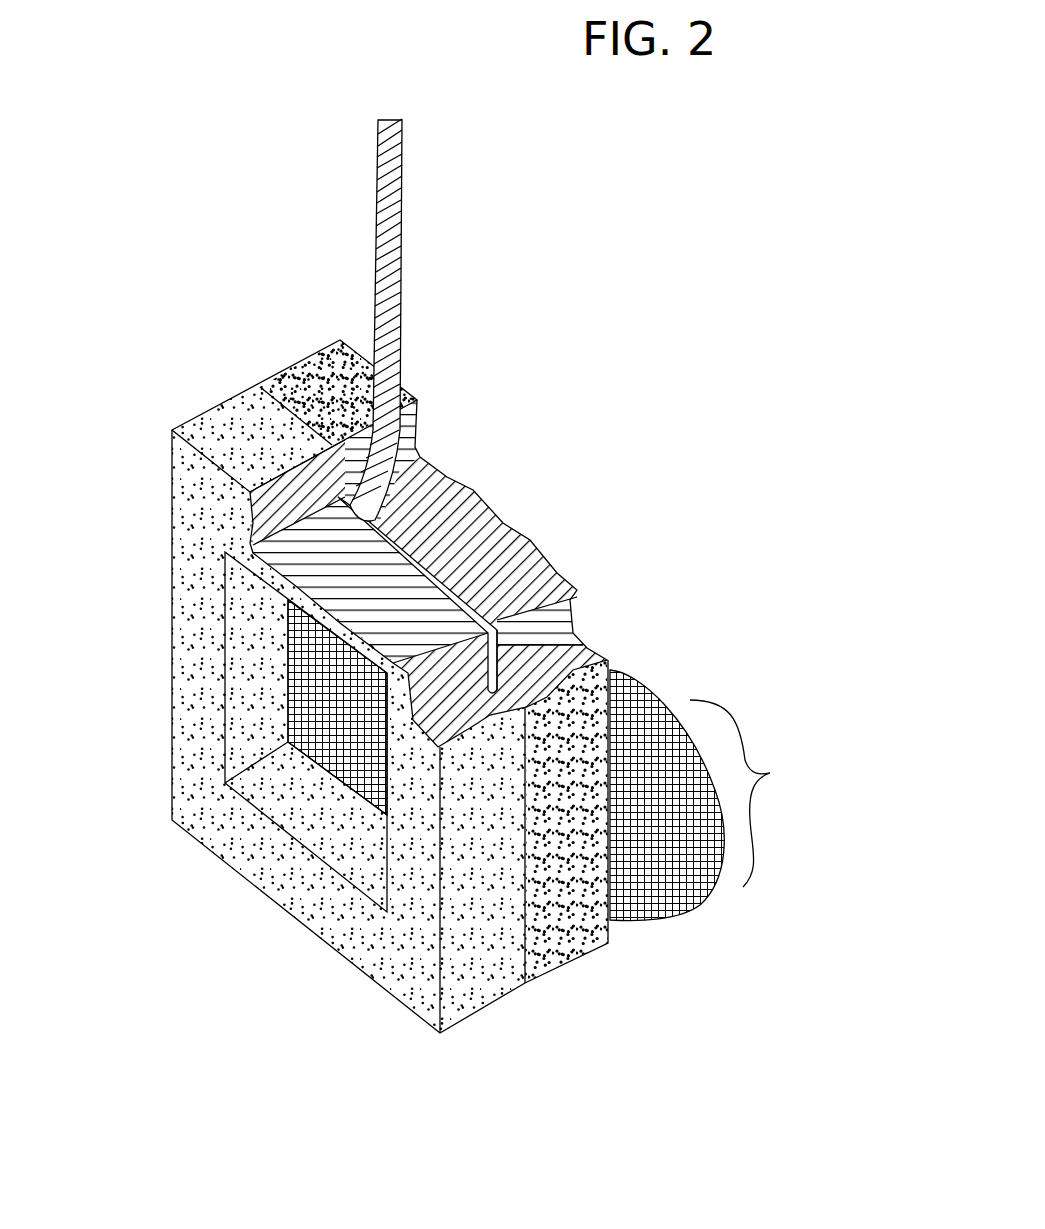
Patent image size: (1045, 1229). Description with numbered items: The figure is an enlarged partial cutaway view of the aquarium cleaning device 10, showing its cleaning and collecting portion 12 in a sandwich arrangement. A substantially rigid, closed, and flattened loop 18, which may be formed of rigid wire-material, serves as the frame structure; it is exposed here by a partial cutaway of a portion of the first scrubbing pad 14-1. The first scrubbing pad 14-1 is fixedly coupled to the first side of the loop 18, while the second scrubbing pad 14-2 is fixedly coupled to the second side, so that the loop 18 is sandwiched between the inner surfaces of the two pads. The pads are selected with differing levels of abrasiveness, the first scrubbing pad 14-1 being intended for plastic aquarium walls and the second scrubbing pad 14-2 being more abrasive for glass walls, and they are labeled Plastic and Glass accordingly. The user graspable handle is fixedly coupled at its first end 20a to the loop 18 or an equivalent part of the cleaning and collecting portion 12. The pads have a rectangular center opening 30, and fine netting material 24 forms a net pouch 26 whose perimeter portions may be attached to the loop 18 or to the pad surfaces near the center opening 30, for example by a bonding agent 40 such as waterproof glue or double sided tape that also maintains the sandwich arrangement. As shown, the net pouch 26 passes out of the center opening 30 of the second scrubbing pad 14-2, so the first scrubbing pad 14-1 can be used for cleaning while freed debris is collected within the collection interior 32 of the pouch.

The aquarium cleaning device 10 is at (593, 352).
The cleaning and collecting portion 12 is at (140, 915).
The first scrubbing pad 14-1 is at (172, 507).
The second scrubbing pad 14-2 is at (327, 347).
The loop 18 is at (465, 607).
The first end of handle 20a is at (397, 328).
The netting material 24 is at (690, 897).
The net pouch 26 is at (770, 773).
The center opening 30 is at (307, 807).
The collection interior 32 is at (307, 673).
The bonding agent 40 is at (323, 472).